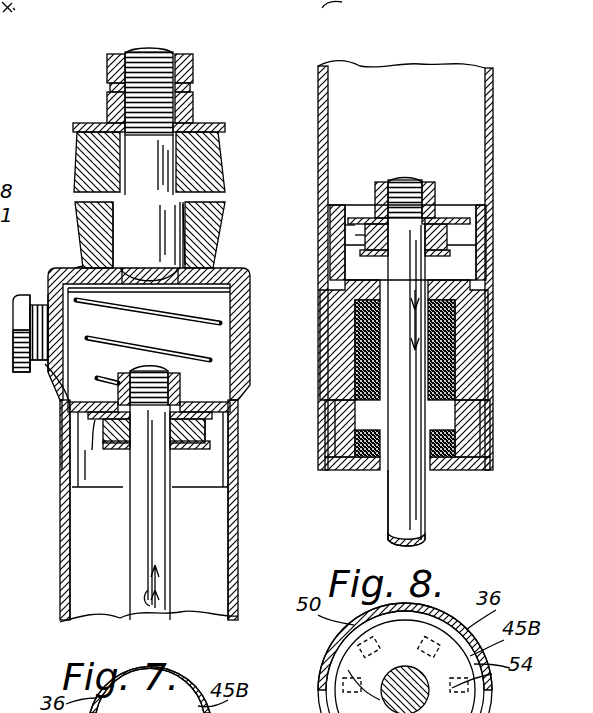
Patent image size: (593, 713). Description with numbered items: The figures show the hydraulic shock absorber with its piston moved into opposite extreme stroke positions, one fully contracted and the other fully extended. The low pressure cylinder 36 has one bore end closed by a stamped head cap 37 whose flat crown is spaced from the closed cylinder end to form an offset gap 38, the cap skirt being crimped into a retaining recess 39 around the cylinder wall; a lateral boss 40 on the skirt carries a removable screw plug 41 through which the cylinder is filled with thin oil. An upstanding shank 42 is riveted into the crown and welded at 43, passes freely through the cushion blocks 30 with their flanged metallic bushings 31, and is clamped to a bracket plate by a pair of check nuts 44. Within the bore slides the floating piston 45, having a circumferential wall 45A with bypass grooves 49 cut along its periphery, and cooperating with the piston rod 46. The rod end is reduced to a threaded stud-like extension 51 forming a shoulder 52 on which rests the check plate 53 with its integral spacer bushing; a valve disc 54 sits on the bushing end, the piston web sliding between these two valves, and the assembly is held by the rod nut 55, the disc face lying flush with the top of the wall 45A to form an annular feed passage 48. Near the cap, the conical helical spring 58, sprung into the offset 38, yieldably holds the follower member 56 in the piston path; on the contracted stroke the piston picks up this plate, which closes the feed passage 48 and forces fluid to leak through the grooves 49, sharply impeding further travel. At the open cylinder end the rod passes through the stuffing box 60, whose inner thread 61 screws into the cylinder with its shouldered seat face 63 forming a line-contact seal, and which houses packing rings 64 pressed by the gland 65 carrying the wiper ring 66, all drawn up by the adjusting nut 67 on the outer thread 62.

In FIG. 7, the cushion block 30 is at (210, 152).
In FIG. 7, the metallic bushing 31 is at (189, 124).
In FIG. 7, the cylinder 36 is at (236, 546).
In FIG. 8, the cylinder 36 is at (485, 96).
In FIG. 7, the head cap 37 is at (248, 291).
In FIG. 7, the offset gap 38 is at (70, 268).
In FIG. 7, the retaining recess 39 is at (226, 416).
In FIG. 7, the lateral boss 40 is at (38, 376).
In FIG. 7, the screw plug 41 is at (40, 298).
In FIG. 7, the shank 42 is at (196, 224).
In FIG. 7, the weld 43 is at (202, 246).
In FIG. 7, the check nuts 44 is at (176, 54).
In FIG. 8, the piston 45 is at (480, 208).
In FIG. 7, the piston wall 45A is at (204, 446).
In FIG. 8, the piston wall 45A is at (476, 250).
In FIG. 7, the piston rod 46 is at (152, 600).
In FIG. 8, the piston rod 46 is at (410, 512).
In FIG. 7, the annular feed passage 48 is at (96, 406).
In FIG. 8, the annular feed passage 48 is at (350, 224).
In FIG. 7, the bypass grooves 49 is at (64, 458).
In FIG. 8, the stud-like extension 51 is at (398, 197).
In FIG. 7, the rod shoulder 52 is at (136, 405).
In FIG. 8, the rod shoulder 52 is at (360, 238).
In FIG. 7, the check plate 53 is at (200, 440).
In FIG. 8, the check plate 53 is at (478, 240).
In FIG. 7, the valve disc 54 is at (90, 456).
In FIG. 8, the valve disc 54 is at (364, 218).
In FIG. 7, the rod nut 55 is at (186, 384).
In FIG. 8, the rod nut 55 is at (430, 182).
In FIG. 7, the follower member 56 is at (45, 370).
In FIG. 7, the conical helical spring 58 is at (224, 320).
In FIG. 7, the stuffing box 60 is at (238, 352).
In FIG. 8, the innermost thread 61 is at (484, 302).
In FIG. 8, the outermost thread 62 is at (328, 464).
In FIG. 8, the shouldered seat face 63 is at (484, 356).
In FIG. 8, the packing rings 64 is at (484, 332).
In FIG. 8, the gland 65 is at (470, 418).
In FIG. 8, the wiper ring 66 is at (374, 468).
In FIG. 8, the adjusting nut 67 is at (470, 458).